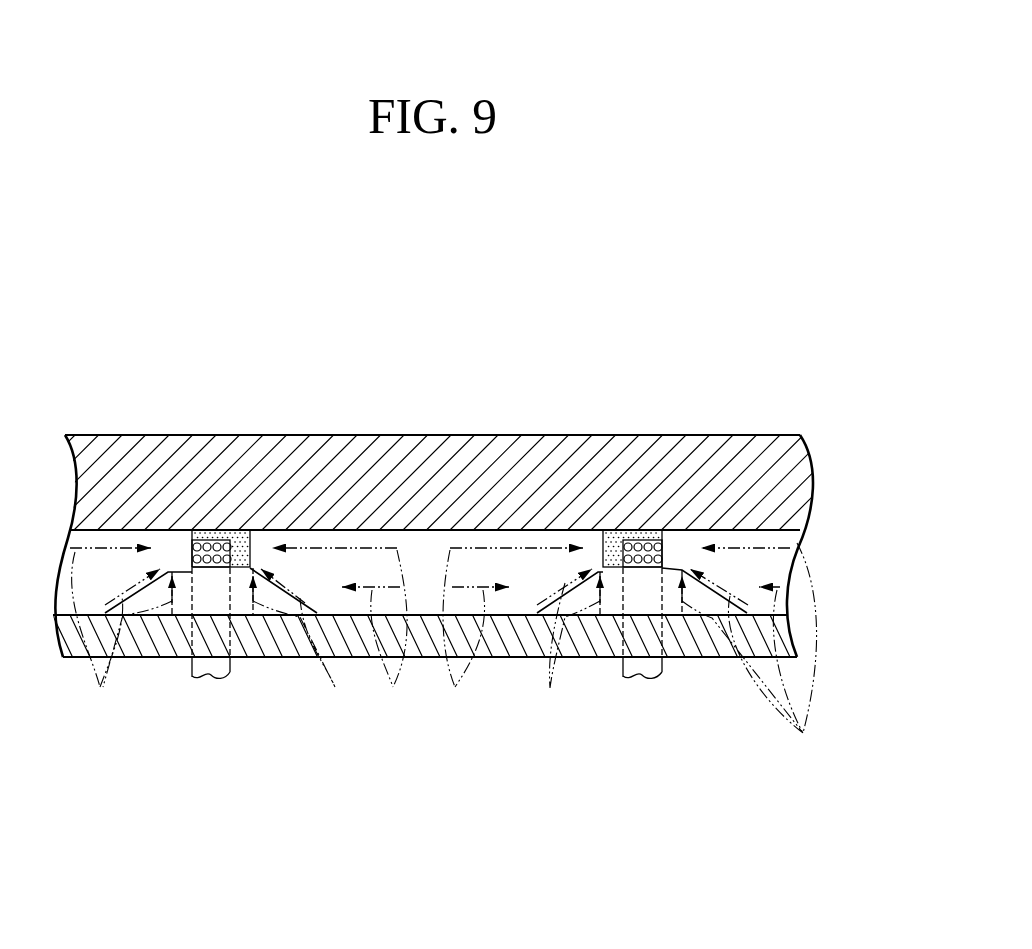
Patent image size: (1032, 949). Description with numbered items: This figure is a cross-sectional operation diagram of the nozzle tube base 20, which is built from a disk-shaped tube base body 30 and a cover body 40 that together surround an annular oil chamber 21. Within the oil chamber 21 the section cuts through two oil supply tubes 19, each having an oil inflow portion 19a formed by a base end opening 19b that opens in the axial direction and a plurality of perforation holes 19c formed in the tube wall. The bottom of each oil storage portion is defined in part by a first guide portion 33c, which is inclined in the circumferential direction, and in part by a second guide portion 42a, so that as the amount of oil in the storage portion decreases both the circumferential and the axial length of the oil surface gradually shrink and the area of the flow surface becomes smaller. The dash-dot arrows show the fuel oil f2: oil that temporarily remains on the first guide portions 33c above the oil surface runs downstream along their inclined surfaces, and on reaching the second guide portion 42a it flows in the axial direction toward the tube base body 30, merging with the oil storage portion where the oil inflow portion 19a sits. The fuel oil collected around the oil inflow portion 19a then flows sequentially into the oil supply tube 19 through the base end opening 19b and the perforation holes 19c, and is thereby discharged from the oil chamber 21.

The nozzle tube base 20 is at (793, 273).
The oil chamber 21 is at (787, 533).
The tube base body 30 is at (595, 432).
The cover body 40 is at (705, 662).
The first guide portion 33c is at (120, 537).
The second guide portion 42a is at (178, 574).
The oil supply tube 19 is at (230, 670).
The oil inflow portion 19a is at (234, 565).
The base end opening 19b is at (217, 540).
The perforation holes 19c is at (219, 567).
The fuel oil f2 is at (445, 657).